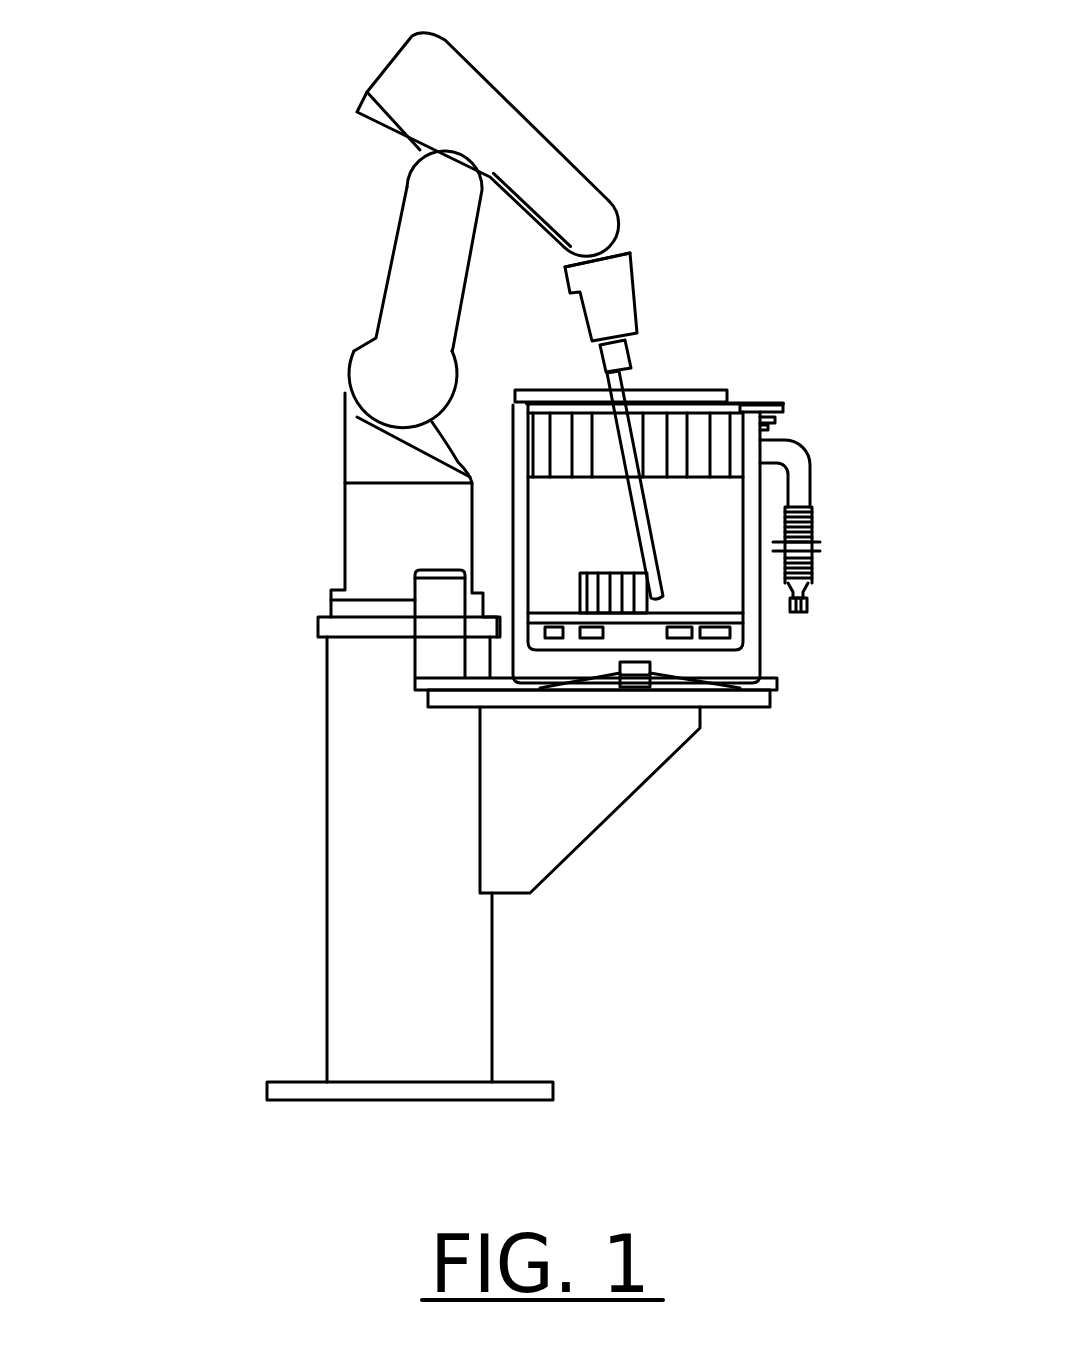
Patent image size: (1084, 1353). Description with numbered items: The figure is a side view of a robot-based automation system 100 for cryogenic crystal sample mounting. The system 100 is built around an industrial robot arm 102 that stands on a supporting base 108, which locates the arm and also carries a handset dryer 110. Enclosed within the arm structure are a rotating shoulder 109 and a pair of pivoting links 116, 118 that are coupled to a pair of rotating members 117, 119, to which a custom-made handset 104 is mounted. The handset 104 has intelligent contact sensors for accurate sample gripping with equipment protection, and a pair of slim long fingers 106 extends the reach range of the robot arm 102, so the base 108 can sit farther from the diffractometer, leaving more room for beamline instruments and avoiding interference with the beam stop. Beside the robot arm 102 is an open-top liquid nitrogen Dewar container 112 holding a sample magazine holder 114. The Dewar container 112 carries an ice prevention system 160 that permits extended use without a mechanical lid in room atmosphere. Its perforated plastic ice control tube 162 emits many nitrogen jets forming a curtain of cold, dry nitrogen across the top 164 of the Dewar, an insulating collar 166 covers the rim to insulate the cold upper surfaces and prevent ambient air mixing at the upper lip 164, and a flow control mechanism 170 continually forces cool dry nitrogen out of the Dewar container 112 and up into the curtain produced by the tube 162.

The robot-based automation system 100 is at (282, 178).
The industrial robot arm 102 is at (350, 328).
The handset 104 is at (619, 308).
The slim long fingers 106 is at (650, 540).
The supporting base 108 is at (368, 742).
The rotating shoulder 109 is at (380, 472).
The handset dryer 110 is at (435, 600).
The Dewar container 112 is at (777, 402).
The sample magazine holder 114 is at (623, 613).
The pivoting link 116 is at (407, 322).
The rotating member 117 is at (563, 207).
The pivoting link 118 is at (480, 92).
The rotating member 119 is at (624, 245).
The ice prevention system 160 is at (510, 390).
The perforated plastic ice control tube 162 is at (577, 393).
The top of the Dewar container 164 is at (702, 398).
The insulating collar 166 is at (700, 430).
The flow control mechanism 170 is at (511, 407).